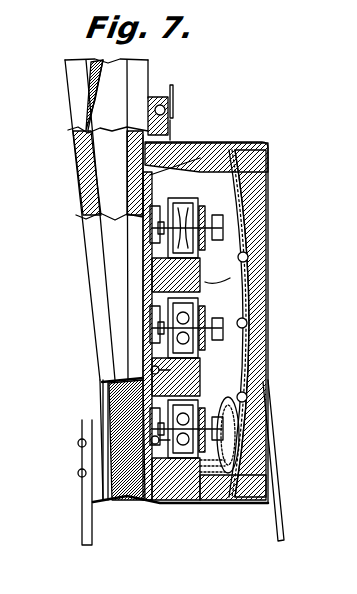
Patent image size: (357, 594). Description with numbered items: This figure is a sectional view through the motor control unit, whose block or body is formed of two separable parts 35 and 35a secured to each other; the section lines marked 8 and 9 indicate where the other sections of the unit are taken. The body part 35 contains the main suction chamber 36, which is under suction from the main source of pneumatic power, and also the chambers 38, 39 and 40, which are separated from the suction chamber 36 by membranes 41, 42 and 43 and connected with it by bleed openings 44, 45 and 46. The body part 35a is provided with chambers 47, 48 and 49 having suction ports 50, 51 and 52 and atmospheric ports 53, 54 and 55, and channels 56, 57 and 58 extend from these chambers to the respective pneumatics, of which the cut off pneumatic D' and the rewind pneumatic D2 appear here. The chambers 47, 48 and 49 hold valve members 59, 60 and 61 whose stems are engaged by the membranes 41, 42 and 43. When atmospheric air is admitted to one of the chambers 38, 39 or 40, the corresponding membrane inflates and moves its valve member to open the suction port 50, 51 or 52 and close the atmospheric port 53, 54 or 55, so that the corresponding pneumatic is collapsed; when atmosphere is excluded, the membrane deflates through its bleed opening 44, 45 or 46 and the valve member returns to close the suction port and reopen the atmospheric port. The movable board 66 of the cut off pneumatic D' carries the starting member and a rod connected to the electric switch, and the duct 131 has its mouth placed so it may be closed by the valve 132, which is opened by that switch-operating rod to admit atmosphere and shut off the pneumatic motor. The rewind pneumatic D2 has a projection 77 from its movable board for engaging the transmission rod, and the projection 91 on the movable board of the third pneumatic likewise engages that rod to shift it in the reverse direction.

The movable board 66 is at (80, 119).
The cut off pneumatic D' is at (80, 157).
The rewind pneumatic D2 is at (106, 412).
The duct 131 is at (158, 97).
The valve 132 is at (175, 95).
The channel 56 is at (182, 140).
The chamber 47 is at (206, 313).
The body part 35 is at (268, 194).
The body part 35a is at (170, 503).
The chamber 38 is at (245, 212).
The membrane 41 is at (247, 231).
The bleed opening 44 is at (249, 257).
The main chamber 36 is at (220, 275).
The membrane 42 is at (244, 292).
The chamber 39 is at (244, 310).
The bleed opening 45 is at (247, 325).
The bleed opening 46 is at (247, 398).
The membrane 43 is at (232, 440).
The chamber 40 is at (238, 463).
The projection 91 is at (283, 520).
The atmospheric port 53 is at (157, 245).
The valve member 59 is at (160, 283).
The chamber 48 is at (160, 299).
The atmospheric port 54 is at (158, 326).
The channel 57 is at (165, 343).
The valve member 60 is at (105, 374).
The chamber 49 is at (168, 412).
The atmospheric port 55 is at (157, 430).
The channel 58 is at (157, 441).
The valve member 61 is at (160, 455).
The projection 77 is at (66, 482).
The suction port 50 is at (186, 245).
The suction port 51 is at (186, 347).
The suction port 52 is at (187, 428).
The section line 8 is at (157, 135).
The section line 9 is at (246, 140).